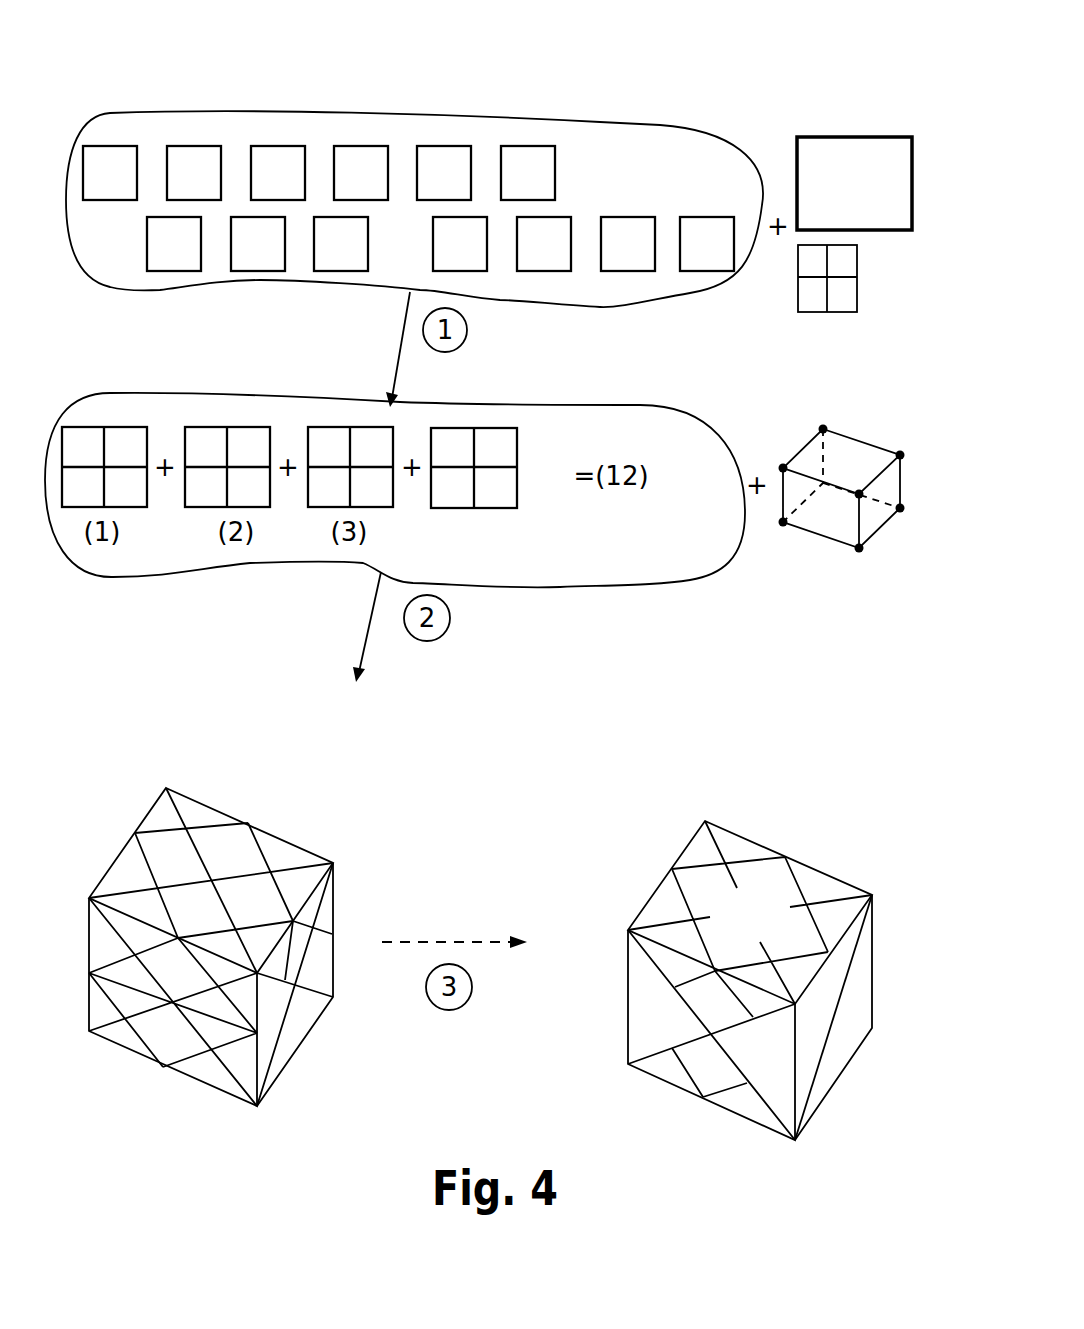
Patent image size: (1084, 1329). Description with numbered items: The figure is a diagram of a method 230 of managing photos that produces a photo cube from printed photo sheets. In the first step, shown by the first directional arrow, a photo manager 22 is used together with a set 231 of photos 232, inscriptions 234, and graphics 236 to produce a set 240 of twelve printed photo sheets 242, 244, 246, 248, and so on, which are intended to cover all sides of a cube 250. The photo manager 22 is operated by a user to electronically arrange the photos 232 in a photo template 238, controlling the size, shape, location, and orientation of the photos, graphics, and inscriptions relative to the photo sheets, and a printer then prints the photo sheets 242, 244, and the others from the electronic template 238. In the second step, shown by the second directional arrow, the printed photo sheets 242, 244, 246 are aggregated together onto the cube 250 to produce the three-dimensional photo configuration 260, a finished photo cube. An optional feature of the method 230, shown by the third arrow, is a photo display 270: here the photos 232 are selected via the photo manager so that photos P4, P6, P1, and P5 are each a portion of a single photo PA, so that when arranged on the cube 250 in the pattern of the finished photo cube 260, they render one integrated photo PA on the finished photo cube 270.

The photo manager 22 is at (866, 136).
The method 230 is at (737, 80).
The set of photos, inscriptions, and graphics 231 is at (702, 298).
The photos 232 is at (113, 146).
The inscriptions 234 is at (170, 272).
The graphics 236 is at (453, 272).
The photo template 238 is at (857, 262).
The set of printed photo sheets 240 is at (630, 590).
The printed photo sheet 242 is at (117, 427).
The printed photo sheet 244 is at (242, 427).
The printed photo sheet 246 is at (364, 427).
The printed photo sheet 248 is at (487, 428).
The cube 250 is at (860, 421).
The three-dimensional photo configuration 260 is at (133, 779).
The photo display 270 is at (804, 806).